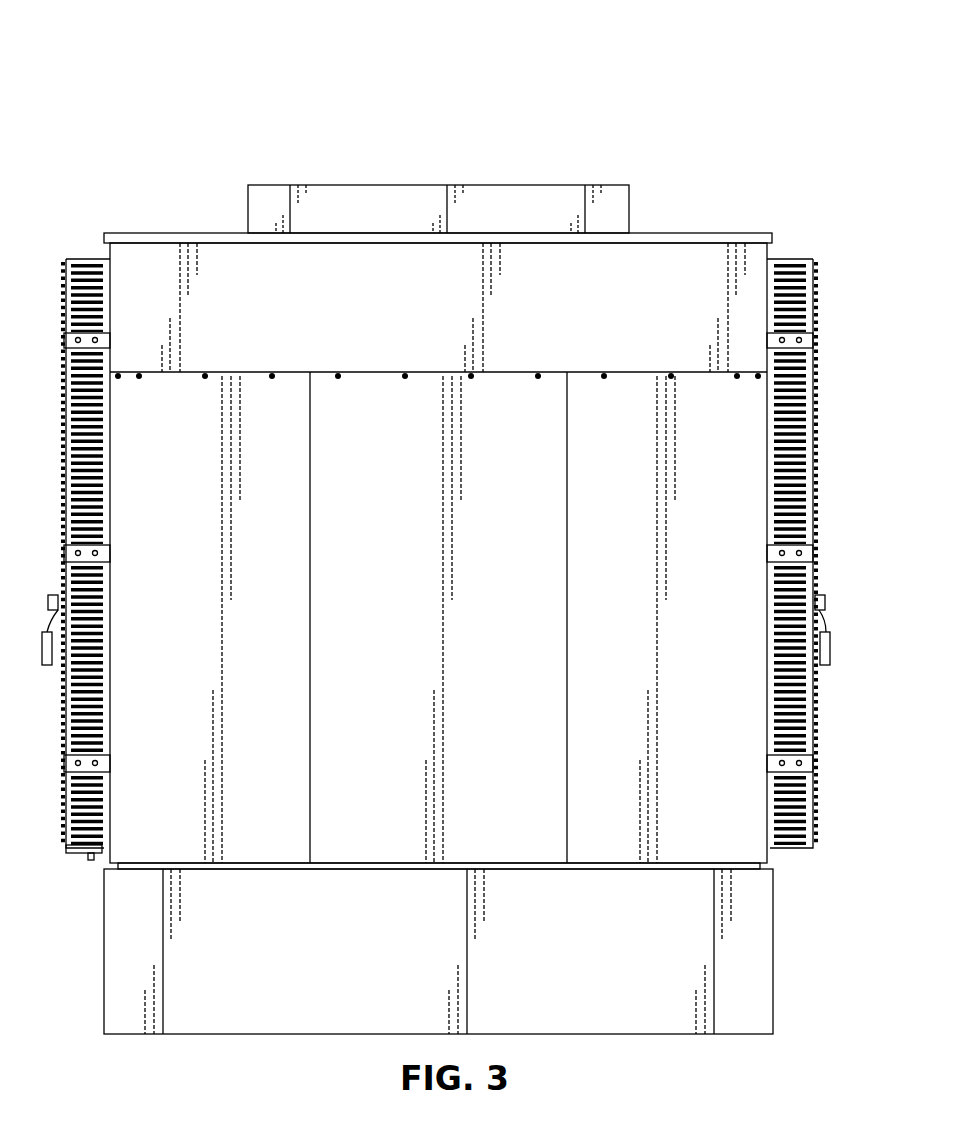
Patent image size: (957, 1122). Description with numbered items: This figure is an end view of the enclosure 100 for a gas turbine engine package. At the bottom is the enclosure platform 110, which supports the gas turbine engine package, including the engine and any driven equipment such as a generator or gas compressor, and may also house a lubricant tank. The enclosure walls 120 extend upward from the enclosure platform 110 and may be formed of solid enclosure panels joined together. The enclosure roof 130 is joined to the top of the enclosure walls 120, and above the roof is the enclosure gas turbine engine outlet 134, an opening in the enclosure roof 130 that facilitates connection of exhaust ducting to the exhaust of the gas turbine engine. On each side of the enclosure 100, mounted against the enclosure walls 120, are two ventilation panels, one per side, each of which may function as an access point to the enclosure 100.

The enclosure 100 is at (150, 30).
The enclosure platform 110 is at (775, 950).
The enclosure walls 120 is at (758, 466).
The enclosure roof 130 is at (652, 233).
The enclosure gas turbine engine outlet 134 is at (437, 185).